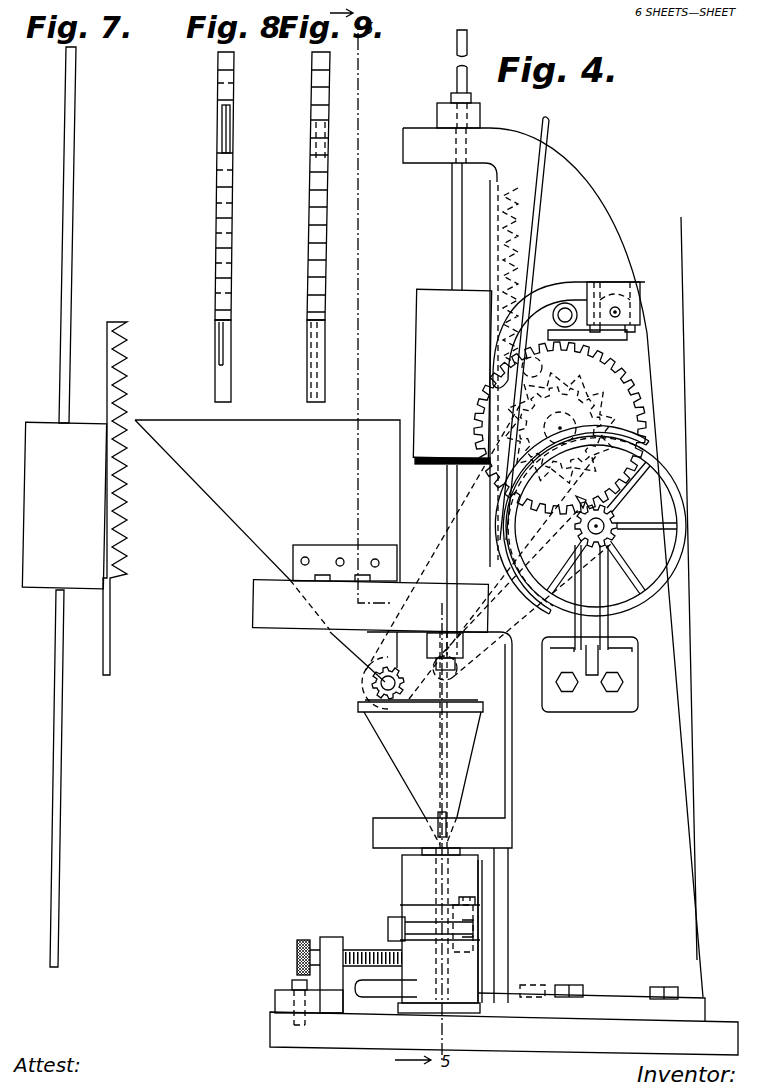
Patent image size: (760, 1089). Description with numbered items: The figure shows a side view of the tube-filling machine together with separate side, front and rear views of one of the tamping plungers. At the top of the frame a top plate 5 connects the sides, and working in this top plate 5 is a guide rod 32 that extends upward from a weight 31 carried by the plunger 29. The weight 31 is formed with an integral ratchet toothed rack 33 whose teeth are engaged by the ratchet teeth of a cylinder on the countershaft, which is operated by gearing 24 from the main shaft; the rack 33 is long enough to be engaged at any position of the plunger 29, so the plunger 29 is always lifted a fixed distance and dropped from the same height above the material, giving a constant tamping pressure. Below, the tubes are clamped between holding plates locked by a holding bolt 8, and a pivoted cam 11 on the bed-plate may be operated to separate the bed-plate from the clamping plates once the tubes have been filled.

In FIG. 4, the top plate 5 is at (458, 79).
In FIG. 4, the holding bolt 8 is at (415, 928).
In FIG. 4, the pivoted cam 11 is at (427, 990).
In FIG. 4, the gearing 24 is at (622, 378).
In FIG. 7, the plunger 29 is at (63, 714).
In FIG. 4, the plunger 29 is at (450, 497).
In FIG. 7, the weight 31 is at (64, 505).
In FIG. 8, the weight 31 is at (221, 258).
In FIG. 4, the weight 31 is at (452, 376).
In FIG. 7, the guide rod 32 is at (72, 192).
In FIG. 8, the guide rod 32 is at (224, 130).
In FIG. 4, the guide rod 32 is at (456, 197).
In FIG. 7, the ratchet toothed rack 33 is at (130, 332).
In FIG. 9, the ratchet toothed rack 33 is at (317, 245).